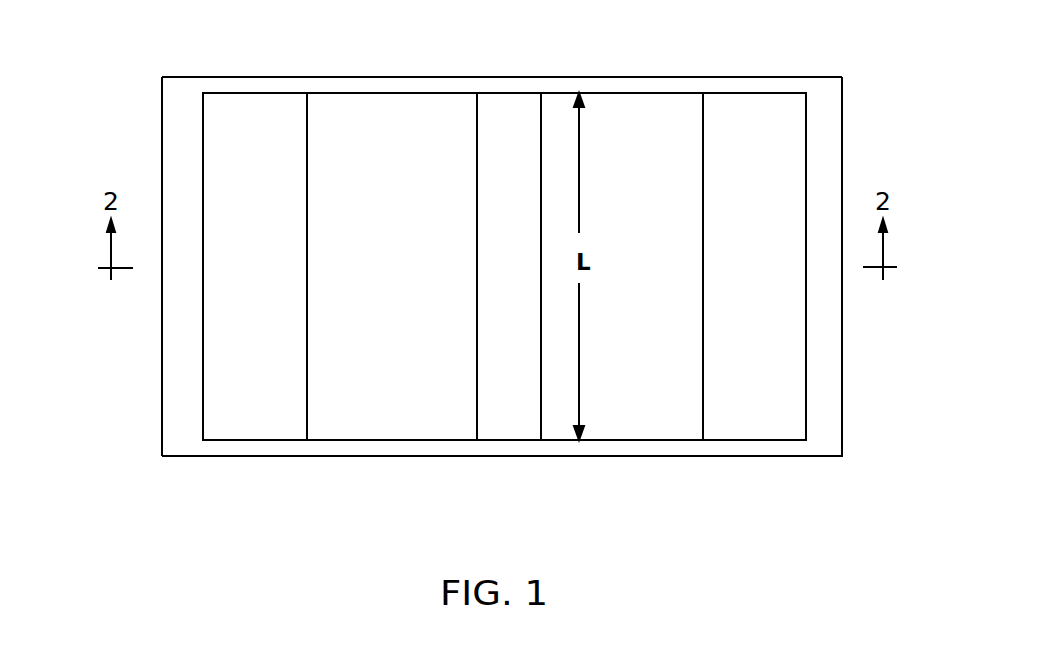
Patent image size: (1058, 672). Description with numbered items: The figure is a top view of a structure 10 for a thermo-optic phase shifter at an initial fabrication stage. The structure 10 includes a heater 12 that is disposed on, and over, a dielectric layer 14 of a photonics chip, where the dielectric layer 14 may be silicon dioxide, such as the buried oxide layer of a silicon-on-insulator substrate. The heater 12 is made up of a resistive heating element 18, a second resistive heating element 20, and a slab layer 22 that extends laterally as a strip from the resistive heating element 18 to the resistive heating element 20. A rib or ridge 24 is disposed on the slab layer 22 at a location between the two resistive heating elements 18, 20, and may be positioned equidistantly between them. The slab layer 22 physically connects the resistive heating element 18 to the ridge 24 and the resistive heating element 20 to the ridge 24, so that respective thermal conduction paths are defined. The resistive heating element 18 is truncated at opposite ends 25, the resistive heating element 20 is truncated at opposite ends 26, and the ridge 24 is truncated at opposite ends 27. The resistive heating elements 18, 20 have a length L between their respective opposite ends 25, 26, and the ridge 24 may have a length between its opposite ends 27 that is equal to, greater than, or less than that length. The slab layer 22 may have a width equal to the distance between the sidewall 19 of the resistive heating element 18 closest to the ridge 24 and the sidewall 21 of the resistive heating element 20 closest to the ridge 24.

The structure 10 is at (160, 40).
The heater 12 is at (175, 152).
The dielectric layer 14 is at (822, 410).
The resistive heating element 18 is at (233, 386).
The sidewall 19 is at (308, 158).
The resistive heating element 20 is at (772, 345).
The sidewall 21 is at (702, 178).
The slab layer 22 is at (367, 235).
The ridge 24 is at (513, 297).
The opposite ends 25 is at (250, 93).
The opposite ends 26 is at (735, 93).
The opposite ends 27 is at (513, 93).